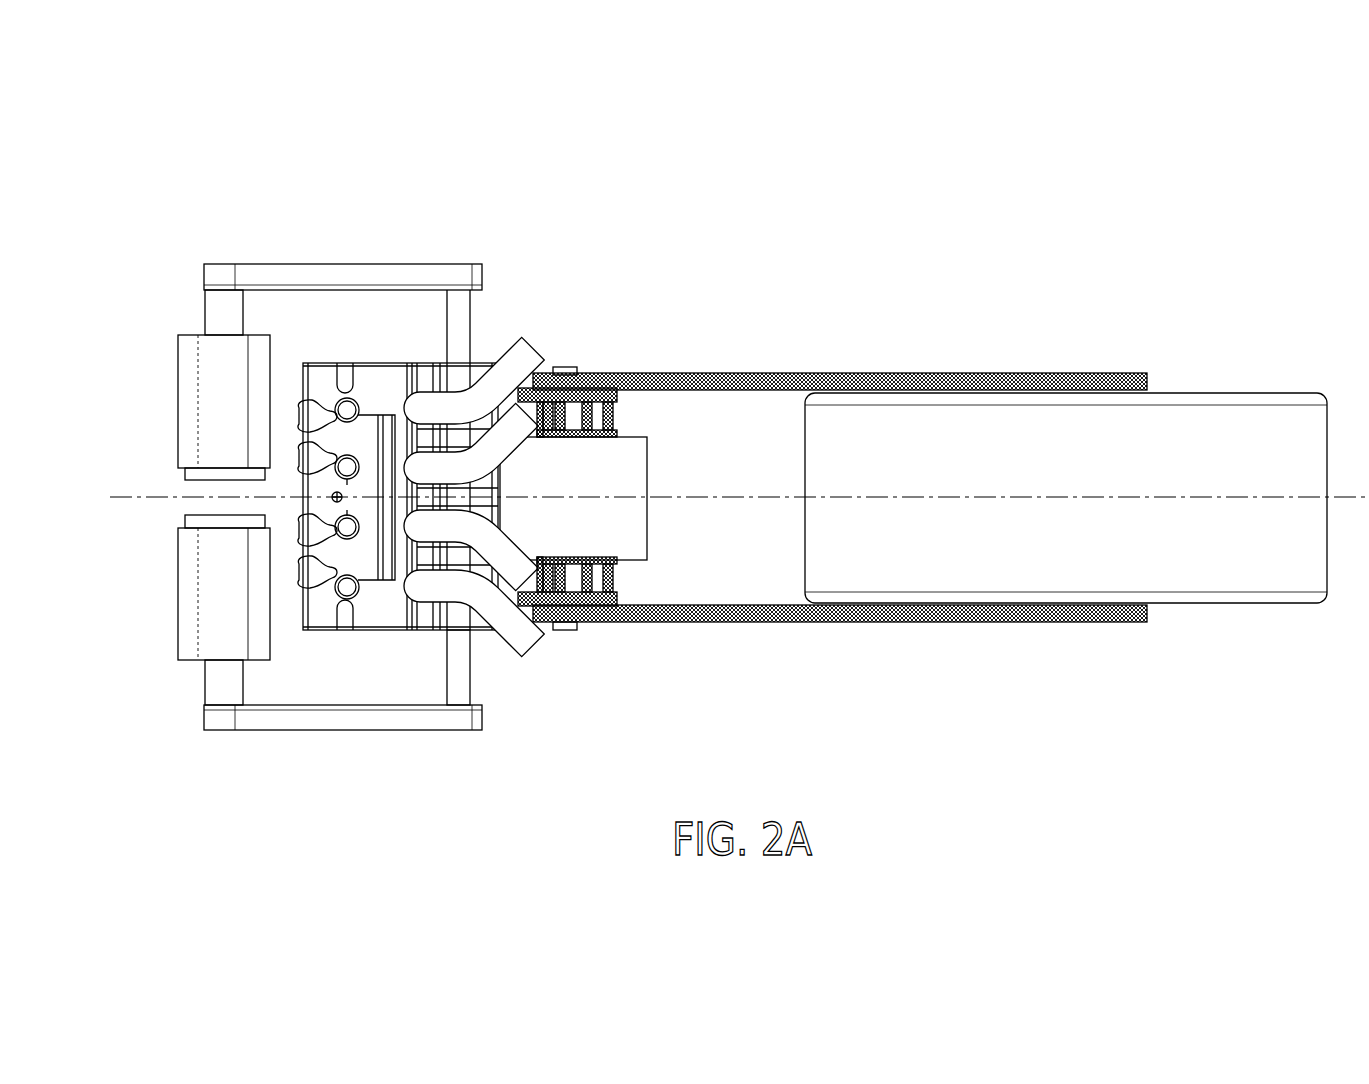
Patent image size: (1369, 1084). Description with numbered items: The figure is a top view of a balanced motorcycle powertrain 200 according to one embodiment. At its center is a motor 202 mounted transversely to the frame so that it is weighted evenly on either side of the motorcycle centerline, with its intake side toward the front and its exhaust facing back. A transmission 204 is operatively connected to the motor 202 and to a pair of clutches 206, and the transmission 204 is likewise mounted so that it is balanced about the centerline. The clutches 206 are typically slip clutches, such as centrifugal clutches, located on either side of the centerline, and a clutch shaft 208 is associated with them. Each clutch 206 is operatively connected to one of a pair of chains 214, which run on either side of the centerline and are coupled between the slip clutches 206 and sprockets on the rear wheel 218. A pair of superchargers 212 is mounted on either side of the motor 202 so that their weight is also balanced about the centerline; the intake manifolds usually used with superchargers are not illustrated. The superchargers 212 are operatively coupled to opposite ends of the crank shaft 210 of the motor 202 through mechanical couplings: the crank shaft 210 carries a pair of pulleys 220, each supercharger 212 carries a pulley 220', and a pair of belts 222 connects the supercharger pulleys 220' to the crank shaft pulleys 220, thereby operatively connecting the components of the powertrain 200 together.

The motorcycle powertrain 200 is at (158, 184).
The motor 202 is at (330, 363).
The transmission 204 is at (630, 458).
The pair of clutches 206 is at (587, 393).
The clutch shaft 208 is at (563, 631).
The crank shaft 210 is at (478, 680).
The pair of superchargers 212 is at (178, 402).
The pair of chains 214 is at (918, 372).
The rear wheel 218 is at (1243, 398).
The pair of pulleys 220 is at (462, 499).
The pulley 220' is at (228, 499).
The pair of belts 222 is at (288, 263).